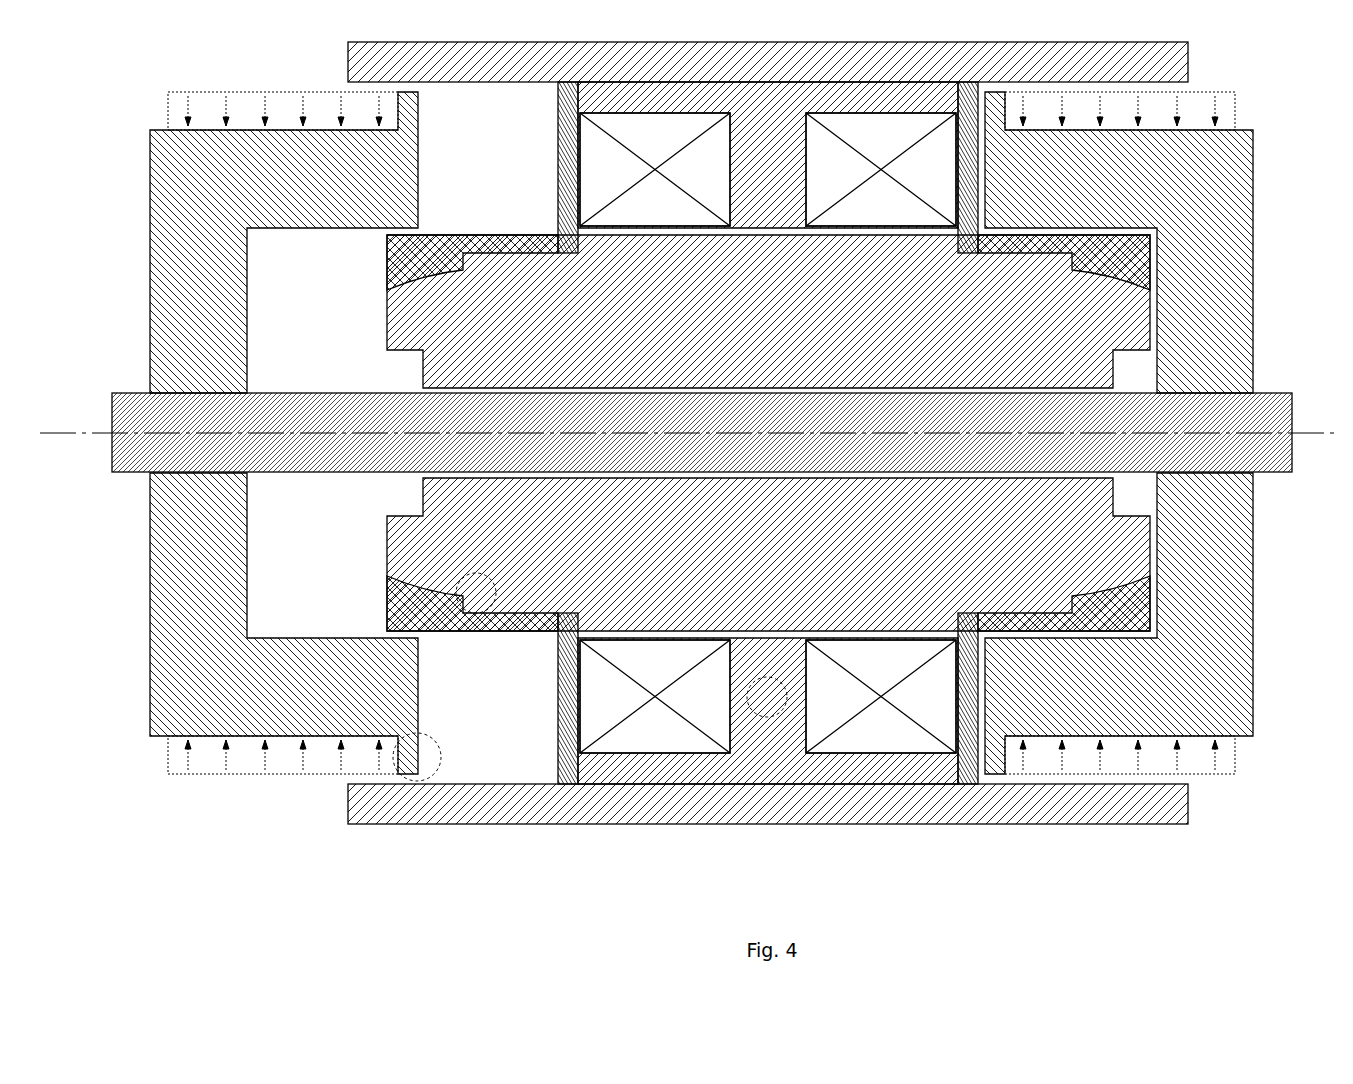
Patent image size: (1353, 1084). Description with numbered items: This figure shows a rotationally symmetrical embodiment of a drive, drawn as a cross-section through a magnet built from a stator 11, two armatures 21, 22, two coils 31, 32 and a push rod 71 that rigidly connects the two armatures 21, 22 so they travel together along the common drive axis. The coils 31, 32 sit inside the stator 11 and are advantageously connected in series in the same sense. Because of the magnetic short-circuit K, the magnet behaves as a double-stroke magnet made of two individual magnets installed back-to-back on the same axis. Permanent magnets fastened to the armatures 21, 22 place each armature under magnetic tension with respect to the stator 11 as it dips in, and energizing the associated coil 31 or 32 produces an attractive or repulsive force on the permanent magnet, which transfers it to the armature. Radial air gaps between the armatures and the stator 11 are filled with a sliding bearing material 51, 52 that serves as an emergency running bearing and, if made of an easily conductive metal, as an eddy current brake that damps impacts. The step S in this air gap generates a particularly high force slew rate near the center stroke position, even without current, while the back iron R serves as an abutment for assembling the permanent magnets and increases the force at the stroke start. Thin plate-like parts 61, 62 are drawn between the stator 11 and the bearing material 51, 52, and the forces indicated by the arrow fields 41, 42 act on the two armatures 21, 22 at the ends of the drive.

The stator 11 is at (768, 433).
The armature 21 is at (284, 433).
The armature 22 is at (1119, 433).
The coil 31 is at (655, 433).
The coil 32 is at (881, 433).
The first pressing force 41 is at (207, 760).
The second pressing force 42 is at (1195, 762).
The sliding bearing material 51 is at (460, 633).
The sliding bearing material 52 is at (1112, 630).
The first plate 61 is at (578, 753).
The second plate 62 is at (990, 780).
The push rod 71 is at (702, 432).
The step S is at (476, 593).
The back iron R is at (417, 757).
The magnetic short-circuit K is at (767, 697).